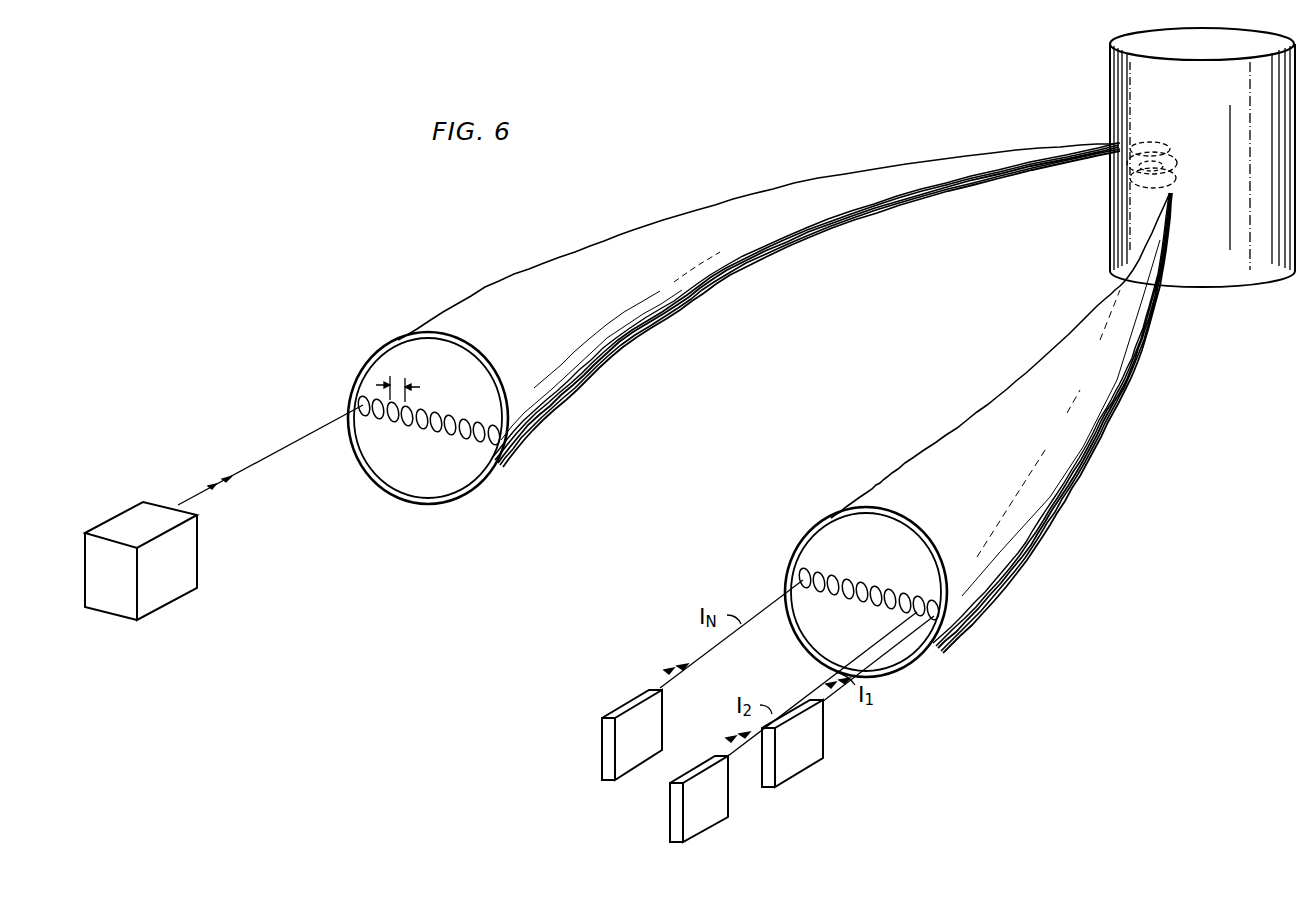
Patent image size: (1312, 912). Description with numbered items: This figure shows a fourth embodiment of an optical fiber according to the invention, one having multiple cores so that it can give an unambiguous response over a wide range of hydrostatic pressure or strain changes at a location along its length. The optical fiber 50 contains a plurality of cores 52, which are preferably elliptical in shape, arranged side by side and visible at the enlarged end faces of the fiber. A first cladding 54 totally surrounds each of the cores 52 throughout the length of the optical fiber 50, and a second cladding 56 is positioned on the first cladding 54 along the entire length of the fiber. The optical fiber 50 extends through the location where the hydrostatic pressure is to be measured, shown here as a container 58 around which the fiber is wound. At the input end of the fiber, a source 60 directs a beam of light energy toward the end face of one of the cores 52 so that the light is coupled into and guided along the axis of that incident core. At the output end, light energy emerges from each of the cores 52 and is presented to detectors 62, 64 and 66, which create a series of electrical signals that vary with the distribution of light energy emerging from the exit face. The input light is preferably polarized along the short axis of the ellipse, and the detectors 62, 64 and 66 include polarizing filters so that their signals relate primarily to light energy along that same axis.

The optical fiber 50 is at (727, 270).
The cores 52 is at (436, 430).
The first cladding 54 is at (442, 489).
The second cladding 56 is at (412, 498).
The container 58 is at (1137, 93).
The source 60 is at (120, 602).
The detector 62 is at (605, 779).
The detector 64 is at (672, 836).
The detector 66 is at (770, 780).